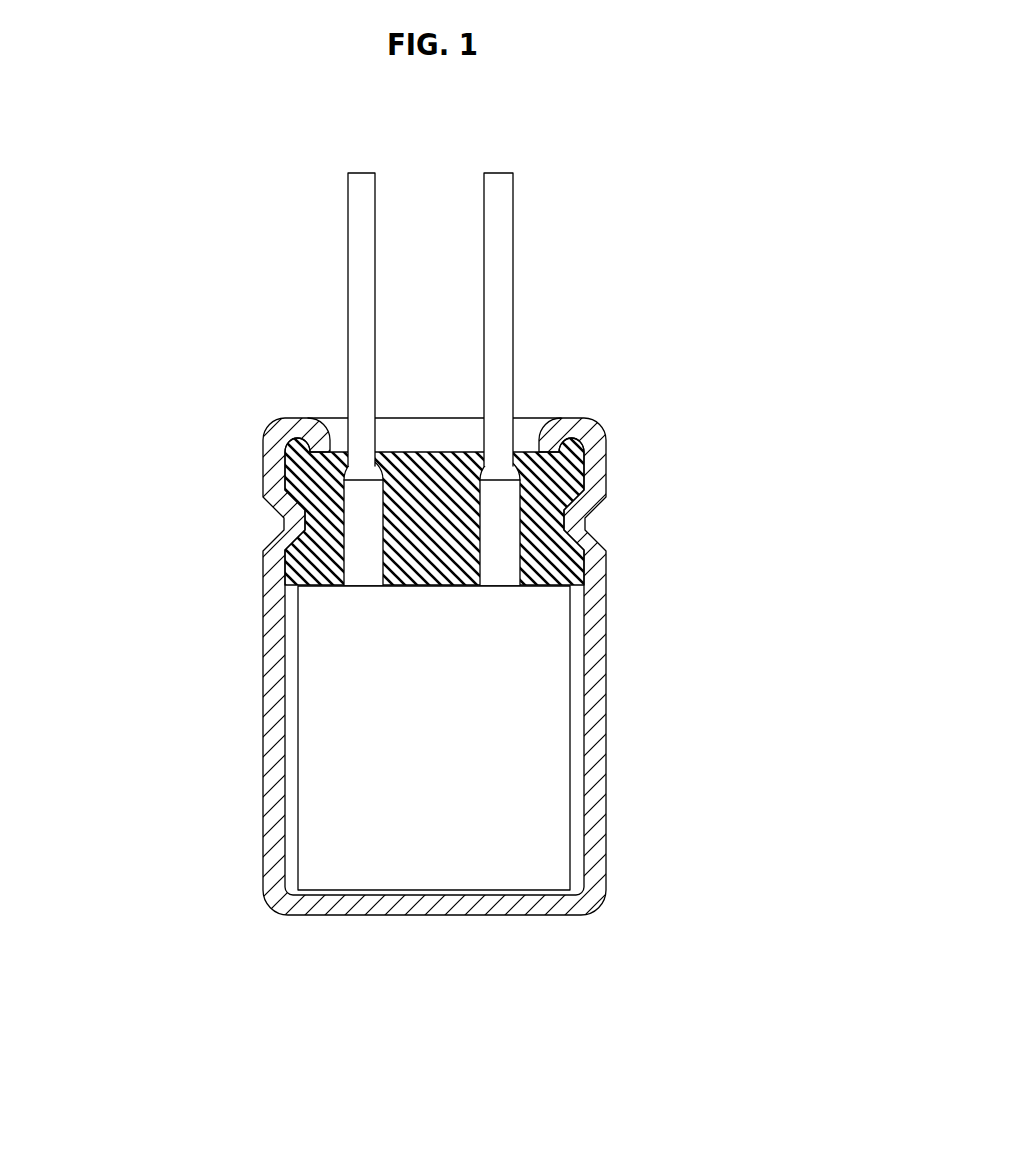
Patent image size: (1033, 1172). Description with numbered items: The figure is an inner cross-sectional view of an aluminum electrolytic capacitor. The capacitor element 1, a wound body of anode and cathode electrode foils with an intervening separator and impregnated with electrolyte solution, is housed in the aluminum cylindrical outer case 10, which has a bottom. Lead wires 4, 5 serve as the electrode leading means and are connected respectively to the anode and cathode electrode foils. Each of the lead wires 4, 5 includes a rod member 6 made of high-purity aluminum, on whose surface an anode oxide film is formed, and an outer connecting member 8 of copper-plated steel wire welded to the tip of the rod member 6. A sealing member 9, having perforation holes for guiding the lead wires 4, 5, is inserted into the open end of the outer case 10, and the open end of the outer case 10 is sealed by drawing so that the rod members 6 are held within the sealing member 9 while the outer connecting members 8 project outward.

The capacitor element 1 is at (392, 860).
The lead wire 4 is at (347, 265).
The lead wire 5 is at (514, 282).
The rod member 6 is at (355, 522).
The outer connecting member 8 is at (348, 375).
The sealing member 9 is at (606, 512).
The outer case 10 is at (475, 905).